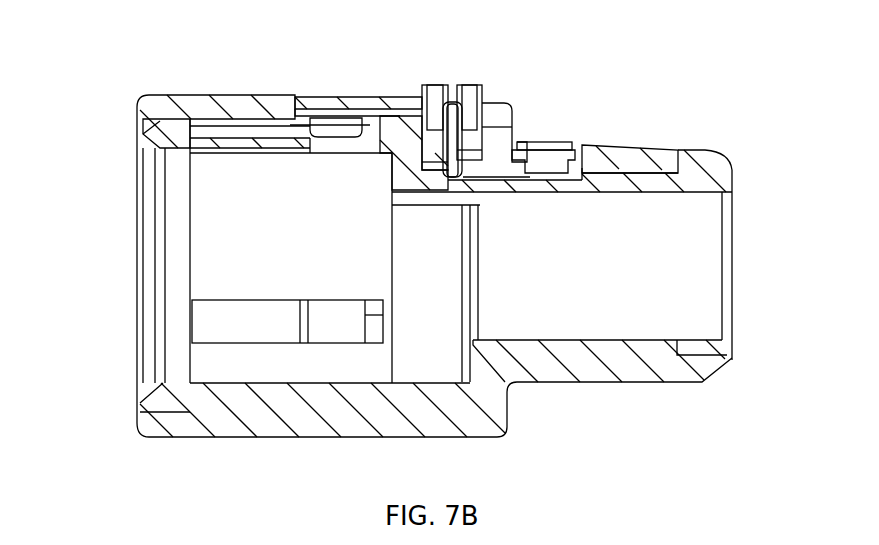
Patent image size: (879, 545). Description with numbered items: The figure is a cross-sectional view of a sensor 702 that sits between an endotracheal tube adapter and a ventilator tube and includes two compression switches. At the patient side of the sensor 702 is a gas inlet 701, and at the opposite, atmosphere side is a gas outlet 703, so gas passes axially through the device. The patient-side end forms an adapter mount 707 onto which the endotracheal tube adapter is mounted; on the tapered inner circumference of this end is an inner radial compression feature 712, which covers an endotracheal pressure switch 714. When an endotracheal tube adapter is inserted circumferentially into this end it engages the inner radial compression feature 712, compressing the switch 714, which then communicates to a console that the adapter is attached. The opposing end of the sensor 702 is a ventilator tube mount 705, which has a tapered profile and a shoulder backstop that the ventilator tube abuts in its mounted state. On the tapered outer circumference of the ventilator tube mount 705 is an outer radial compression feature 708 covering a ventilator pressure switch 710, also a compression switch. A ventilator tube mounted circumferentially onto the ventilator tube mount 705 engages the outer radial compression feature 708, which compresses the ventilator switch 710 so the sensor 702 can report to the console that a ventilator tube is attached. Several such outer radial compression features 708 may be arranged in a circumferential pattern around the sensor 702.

The gas inlet 701 is at (134, 177).
The sensor 702 is at (242, 436).
The gas outlet 703 is at (734, 262).
The ventilator tube mount 705 is at (627, 383).
The adapter mount 707 is at (196, 94).
The outer radial compression feature 708 is at (625, 148).
The ventilator pressure switch 710 is at (540, 165).
The inner radial compression feature 712 is at (237, 149).
The endotracheal pressure switch 714 is at (340, 123).